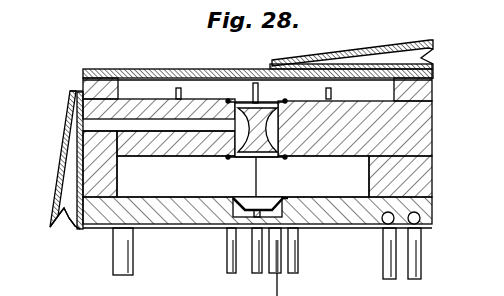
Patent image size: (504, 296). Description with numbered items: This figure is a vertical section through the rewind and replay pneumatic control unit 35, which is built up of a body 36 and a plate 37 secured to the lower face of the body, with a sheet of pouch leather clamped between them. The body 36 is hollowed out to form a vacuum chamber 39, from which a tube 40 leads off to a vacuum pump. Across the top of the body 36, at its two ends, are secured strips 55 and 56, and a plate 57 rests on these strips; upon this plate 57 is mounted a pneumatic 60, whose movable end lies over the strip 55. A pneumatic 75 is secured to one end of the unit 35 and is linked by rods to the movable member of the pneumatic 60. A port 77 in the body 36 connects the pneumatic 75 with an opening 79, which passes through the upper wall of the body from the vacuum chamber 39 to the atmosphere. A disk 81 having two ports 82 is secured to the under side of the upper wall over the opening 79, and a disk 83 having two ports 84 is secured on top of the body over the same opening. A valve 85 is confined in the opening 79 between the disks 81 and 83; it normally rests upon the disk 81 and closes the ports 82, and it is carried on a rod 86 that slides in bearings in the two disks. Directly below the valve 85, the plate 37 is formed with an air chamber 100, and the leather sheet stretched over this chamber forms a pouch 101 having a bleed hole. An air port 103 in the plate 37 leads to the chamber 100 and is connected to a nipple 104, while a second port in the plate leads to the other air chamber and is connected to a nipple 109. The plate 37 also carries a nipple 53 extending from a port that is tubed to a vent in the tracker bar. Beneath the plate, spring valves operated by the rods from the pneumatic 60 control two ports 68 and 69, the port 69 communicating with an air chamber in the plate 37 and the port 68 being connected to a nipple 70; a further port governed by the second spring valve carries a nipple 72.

The rewind and replay pneumatic control unit 35 is at (263, 160).
The body 36 is at (423, 177).
The plate 37 is at (424, 218).
The vacuum chamber 39 is at (243, 176).
The tube 40 is at (115, 253).
The nipple 53 is at (292, 274).
The strip 55 is at (432, 98).
The strip 56 is at (97, 69).
The plate 57 is at (188, 69).
The pneumatic 60 is at (396, 48).
The port 68 is at (417, 215).
The port 69 is at (384, 212).
The nipple 70 is at (419, 269).
The nipple 72 is at (387, 269).
The pneumatic 75 is at (58, 168).
The port 77 is at (132, 128).
The opening 79 is at (275, 133).
The disk 81 is at (229, 158).
The ports 82 is at (283, 159).
The disk 83 is at (286, 101).
The ports 84 is at (266, 110).
The valve 85 is at (227, 101).
The rod 86 is at (256, 172).
The air chamber 100 is at (230, 194).
The pouch 101 is at (283, 197).
The air port 103 is at (259, 197).
The nipple 104 is at (262, 274).
The nipple 109 is at (231, 274).